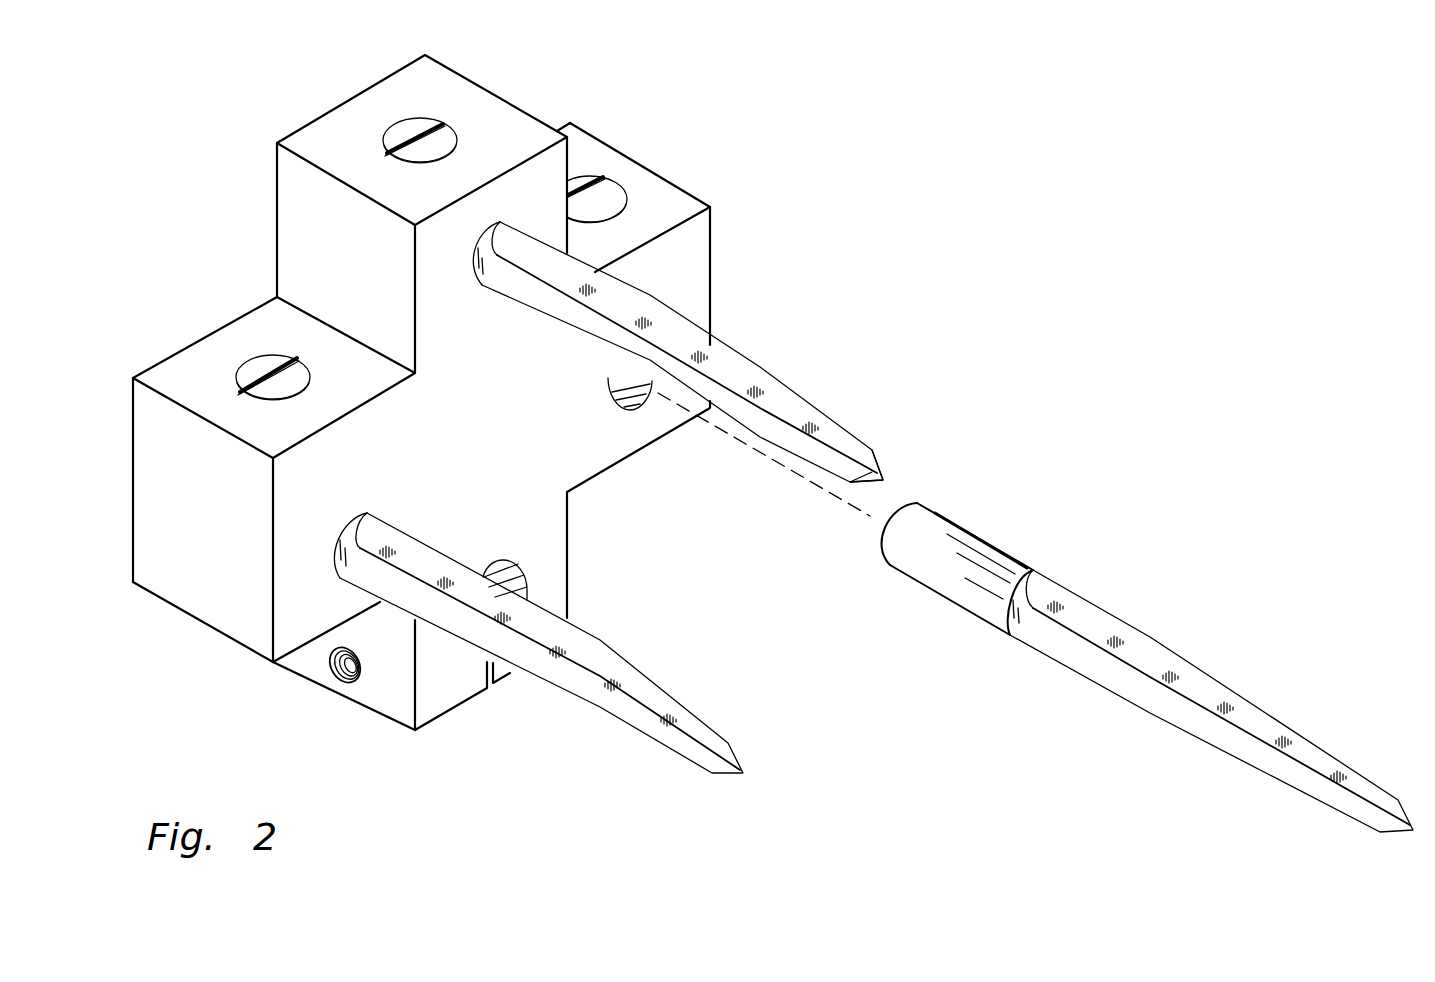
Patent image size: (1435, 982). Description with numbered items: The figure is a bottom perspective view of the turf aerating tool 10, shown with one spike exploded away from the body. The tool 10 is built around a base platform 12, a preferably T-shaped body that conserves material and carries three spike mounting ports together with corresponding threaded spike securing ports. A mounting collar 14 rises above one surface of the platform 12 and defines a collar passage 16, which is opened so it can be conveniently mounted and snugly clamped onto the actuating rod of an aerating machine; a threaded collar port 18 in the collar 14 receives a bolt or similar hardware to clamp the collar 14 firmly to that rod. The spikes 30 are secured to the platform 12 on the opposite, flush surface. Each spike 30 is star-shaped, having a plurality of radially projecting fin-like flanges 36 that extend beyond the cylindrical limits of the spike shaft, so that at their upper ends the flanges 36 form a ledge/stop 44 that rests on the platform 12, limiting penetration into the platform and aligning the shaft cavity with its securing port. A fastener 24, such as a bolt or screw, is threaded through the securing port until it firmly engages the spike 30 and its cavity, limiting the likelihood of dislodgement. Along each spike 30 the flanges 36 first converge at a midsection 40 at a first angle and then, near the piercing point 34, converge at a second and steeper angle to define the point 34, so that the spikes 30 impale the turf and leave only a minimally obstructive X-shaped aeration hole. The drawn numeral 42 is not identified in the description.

The turf aerating tool 10 is at (833, 256).
The base platform 12 is at (712, 232).
The mounting collar 14 is at (275, 185).
The collar passage 16 is at (520, 582).
The threaded collar port 18 is at (337, 682).
The fastener 24 is at (440, 140).
The spike 30 is at (1172, 594).
The piercing point 34 is at (873, 450).
The fin-like flanges 36 is at (1078, 595).
The midsection 40 is at (1123, 680).
The upper pin 42 is at (880, 473).
The ledge/stop 44 is at (365, 513).